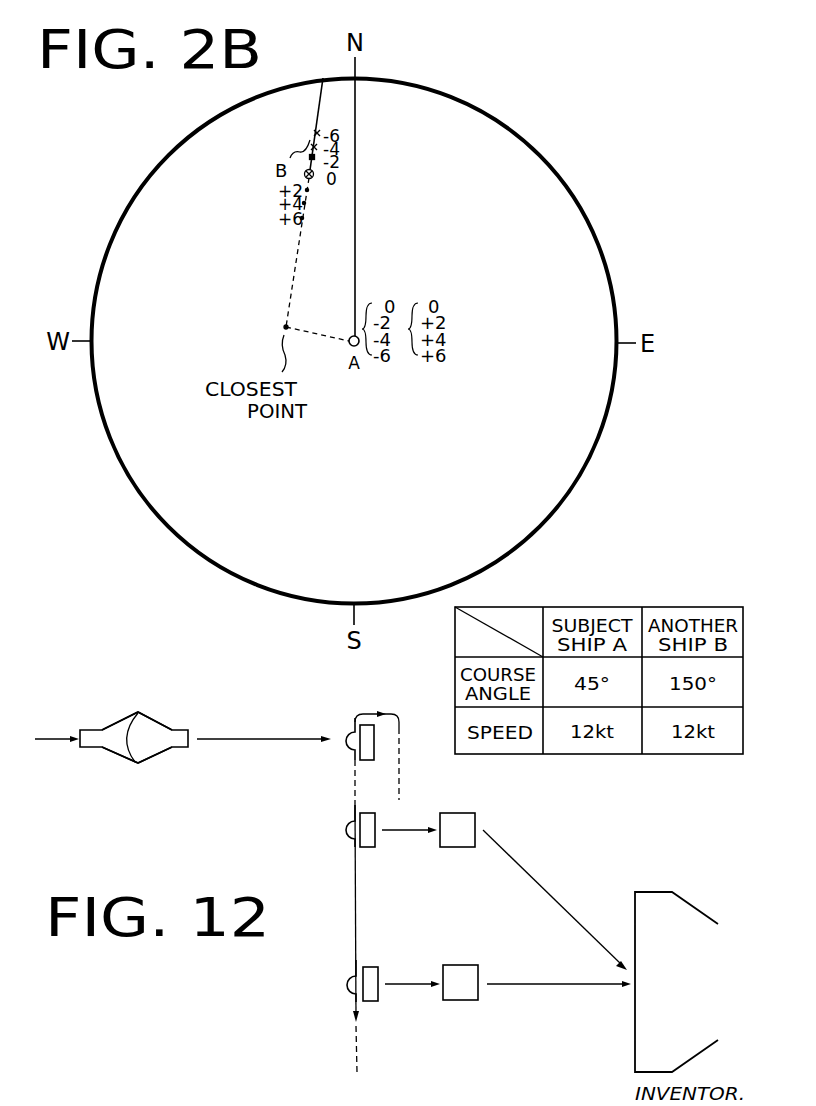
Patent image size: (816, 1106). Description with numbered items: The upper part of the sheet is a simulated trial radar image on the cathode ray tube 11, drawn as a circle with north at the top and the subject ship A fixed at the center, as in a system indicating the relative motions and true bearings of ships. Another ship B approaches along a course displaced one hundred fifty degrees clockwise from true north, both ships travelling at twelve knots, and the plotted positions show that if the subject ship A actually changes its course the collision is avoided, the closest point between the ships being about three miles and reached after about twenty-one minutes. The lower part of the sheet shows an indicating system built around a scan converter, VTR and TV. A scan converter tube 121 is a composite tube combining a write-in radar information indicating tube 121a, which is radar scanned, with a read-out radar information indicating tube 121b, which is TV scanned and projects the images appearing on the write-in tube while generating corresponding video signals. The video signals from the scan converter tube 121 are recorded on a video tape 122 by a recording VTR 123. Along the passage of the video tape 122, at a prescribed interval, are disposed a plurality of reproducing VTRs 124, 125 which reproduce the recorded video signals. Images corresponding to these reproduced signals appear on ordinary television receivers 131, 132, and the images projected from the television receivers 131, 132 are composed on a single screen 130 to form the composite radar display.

In FIG. 2B, the cathode ray tube 11 is at (581, 207).
In FIG. 12, the scan converter tube 121 is at (141, 741).
In FIG. 12, the write-in radar information indicating tube 121a is at (116, 722).
In FIG. 12, the read-out radar information indicating tube 121b is at (162, 722).
In FIG. 12, the video tape 122 is at (397, 709).
In FIG. 12, the recording VTR 123 is at (371, 760).
In FIG. 12, the reproducing VTR 124 is at (372, 848).
In FIG. 12, the reproducing VTR 125 is at (375, 1002).
In FIG. 12, the single screen 130 is at (645, 883).
In FIG. 12, the television receiver 131 is at (456, 848).
In FIG. 12, the television receiver 132 is at (464, 1001).